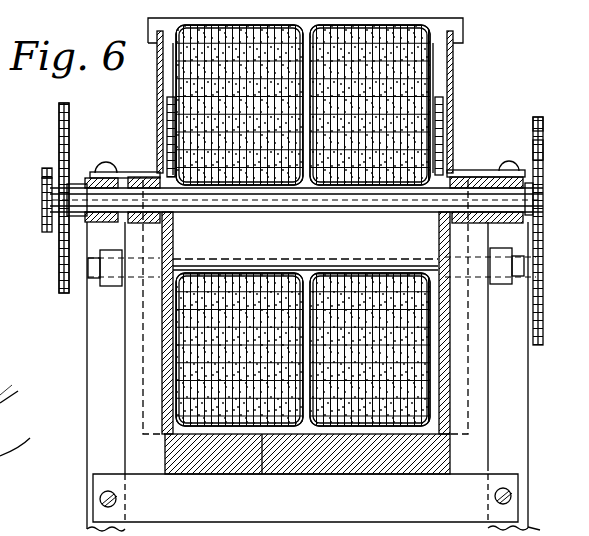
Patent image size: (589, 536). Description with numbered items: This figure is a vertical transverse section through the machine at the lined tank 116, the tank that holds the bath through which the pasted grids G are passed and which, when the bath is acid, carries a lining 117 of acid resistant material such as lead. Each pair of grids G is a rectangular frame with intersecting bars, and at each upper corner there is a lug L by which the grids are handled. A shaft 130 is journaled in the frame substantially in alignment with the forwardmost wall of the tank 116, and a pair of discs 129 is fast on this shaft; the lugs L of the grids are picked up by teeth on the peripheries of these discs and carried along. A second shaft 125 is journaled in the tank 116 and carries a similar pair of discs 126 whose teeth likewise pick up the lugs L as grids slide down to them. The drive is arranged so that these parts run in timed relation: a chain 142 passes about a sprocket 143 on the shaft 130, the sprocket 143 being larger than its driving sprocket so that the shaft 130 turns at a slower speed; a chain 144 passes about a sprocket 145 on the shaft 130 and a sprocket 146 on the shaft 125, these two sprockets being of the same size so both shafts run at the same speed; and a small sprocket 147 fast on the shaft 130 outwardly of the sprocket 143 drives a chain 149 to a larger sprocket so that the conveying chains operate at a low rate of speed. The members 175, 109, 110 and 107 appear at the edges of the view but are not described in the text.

The lug L is at (150, 28).
The discs 129 is at (157, 78).
The discs 126 is at (170, 118).
The grids G is at (420, 86).
The shaft 125 is at (330, 268).
The shaft 130 is at (280, 206).
The chain 142 is at (60, 110).
The sprocket 143 is at (60, 146).
The chain 149 is at (42, 172).
The small sprocket 147 is at (42, 193).
The sprocket 146 is at (543, 308).
The chain 144 is at (533, 128).
The sprocket 145 is at (533, 153).
The lined tank 116 is at (176, 440).
The lining 117 is at (262, 474).
The element 175 is at (11, 374).
The element 109 is at (27, 388).
The element 110 is at (28, 437).
The frame member 107 is at (553, 527).